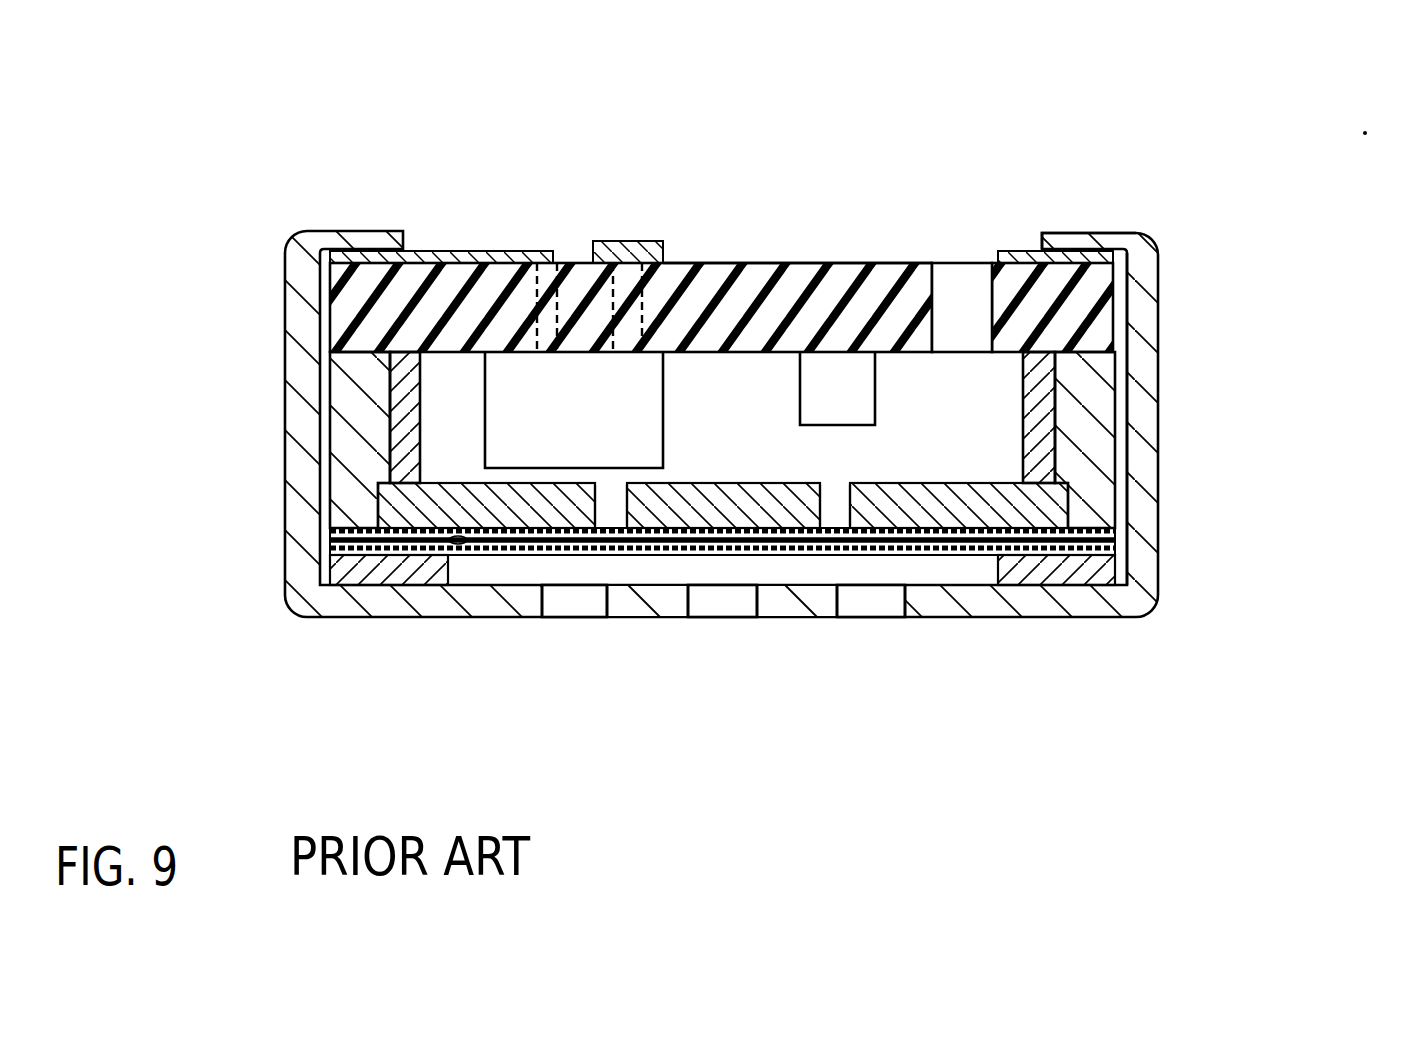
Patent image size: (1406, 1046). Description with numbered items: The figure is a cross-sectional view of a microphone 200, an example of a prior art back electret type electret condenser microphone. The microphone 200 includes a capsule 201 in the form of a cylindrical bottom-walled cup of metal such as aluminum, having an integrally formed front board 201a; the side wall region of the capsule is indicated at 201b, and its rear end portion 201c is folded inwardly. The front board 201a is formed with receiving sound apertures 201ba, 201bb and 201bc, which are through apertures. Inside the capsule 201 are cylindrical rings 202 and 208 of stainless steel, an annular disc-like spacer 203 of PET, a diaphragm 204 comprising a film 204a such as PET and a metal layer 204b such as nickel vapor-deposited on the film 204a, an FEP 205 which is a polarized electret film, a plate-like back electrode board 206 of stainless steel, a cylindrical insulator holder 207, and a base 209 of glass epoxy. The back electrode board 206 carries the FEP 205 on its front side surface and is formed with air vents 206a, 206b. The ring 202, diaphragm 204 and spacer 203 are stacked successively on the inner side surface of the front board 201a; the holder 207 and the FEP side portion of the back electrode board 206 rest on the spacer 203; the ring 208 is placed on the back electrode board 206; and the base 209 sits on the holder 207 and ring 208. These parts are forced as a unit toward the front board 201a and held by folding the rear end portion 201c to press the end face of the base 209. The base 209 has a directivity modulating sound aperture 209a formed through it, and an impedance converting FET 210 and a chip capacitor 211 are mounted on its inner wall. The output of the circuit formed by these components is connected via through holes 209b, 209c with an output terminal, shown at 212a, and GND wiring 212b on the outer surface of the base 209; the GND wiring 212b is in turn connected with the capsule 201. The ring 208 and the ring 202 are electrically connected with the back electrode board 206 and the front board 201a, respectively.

The microphone 200 is at (1251, 205).
The capsule 201 is at (787, 445).
The front board 201a is at (811, 661).
The side wall portion of housing 201b is at (1143, 328).
The rear end portion 201c is at (1078, 238).
The receiving sound aperture 201ba is at (568, 600).
The receiving sound aperture 201bb is at (718, 600).
The receiving sound aperture 201bc is at (865, 600).
The ring 202 is at (330, 572).
The spacer 203 is at (1110, 545).
The diaphragm 204 is at (756, 614).
The film 204a is at (443, 557).
The metal layer 204b is at (477, 553).
The FEP 205 is at (947, 557).
The back electrode board 206 is at (629, 635).
The air vent 206a is at (605, 517).
The air vent 206b is at (837, 517).
The holder 207 is at (1090, 450).
The ring 208 is at (1040, 400).
The base 209 is at (676, 199).
The directivity modulating sound aperture 209a is at (965, 280).
The through hole 209b is at (677, 265).
The through hole 209c is at (513, 255).
The FET 210 is at (588, 382).
The chip capacitor 211 is at (840, 380).
The upper electrode bump 212a is at (650, 240).
The GND wiring 212b is at (442, 255).